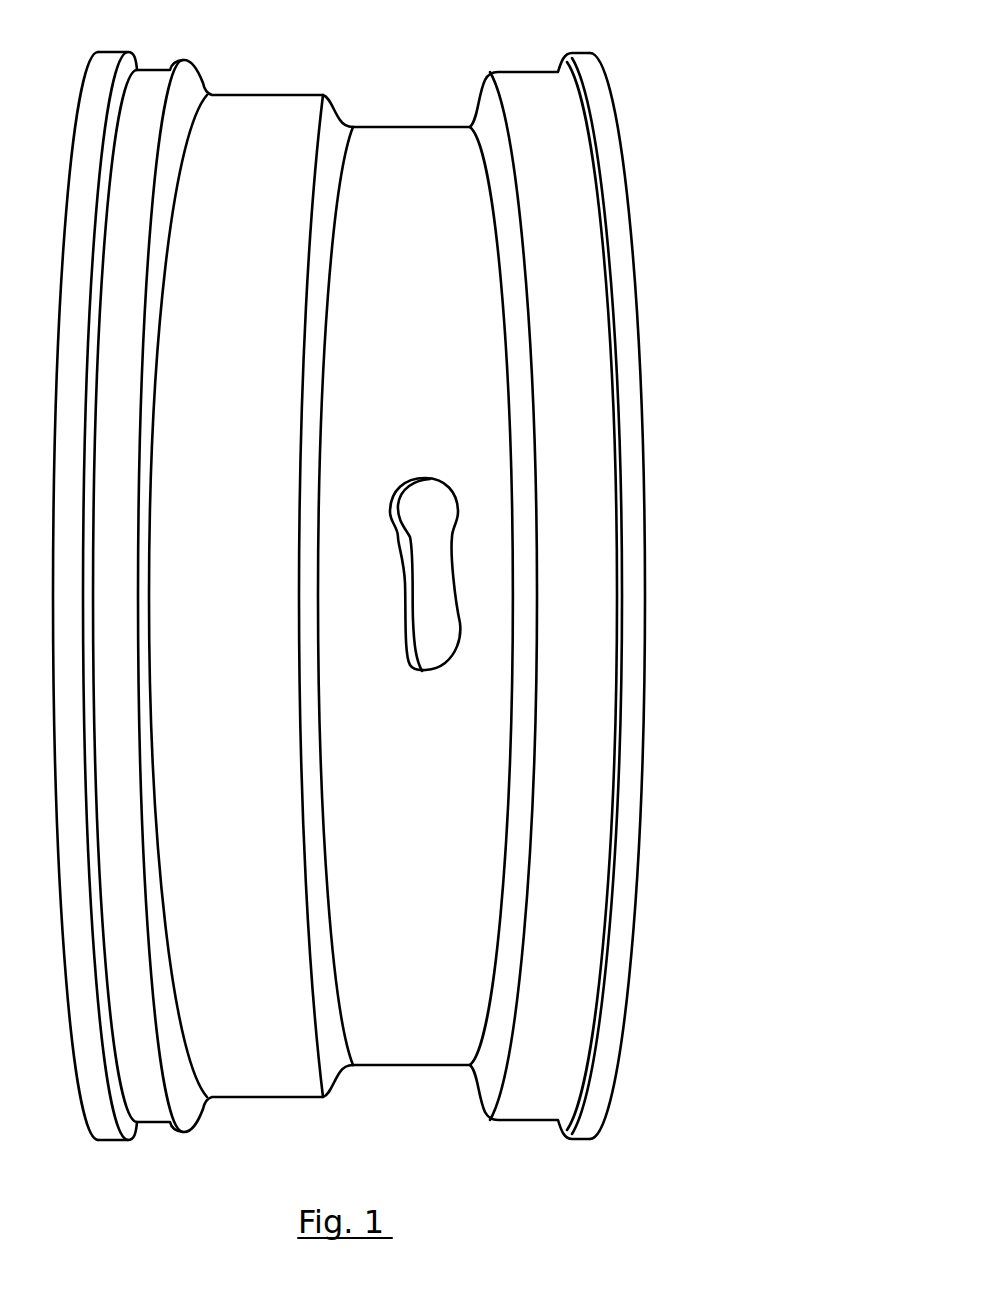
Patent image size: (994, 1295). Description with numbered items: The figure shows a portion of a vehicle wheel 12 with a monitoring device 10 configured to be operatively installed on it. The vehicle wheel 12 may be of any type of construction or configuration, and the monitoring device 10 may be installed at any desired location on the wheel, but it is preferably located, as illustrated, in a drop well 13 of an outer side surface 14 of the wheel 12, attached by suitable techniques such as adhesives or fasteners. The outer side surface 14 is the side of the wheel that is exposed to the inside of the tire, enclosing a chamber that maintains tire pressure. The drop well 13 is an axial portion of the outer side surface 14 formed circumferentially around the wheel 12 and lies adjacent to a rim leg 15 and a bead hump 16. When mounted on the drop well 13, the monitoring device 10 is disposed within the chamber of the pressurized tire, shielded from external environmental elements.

The monitoring device 10 is at (438, 593).
The vehicle wheel 12 is at (667, 238).
The drop well 13 is at (465, 842).
The outer side surface 14 is at (463, 278).
The rim leg 15 is at (508, 962).
The bead hump 16 is at (580, 688).